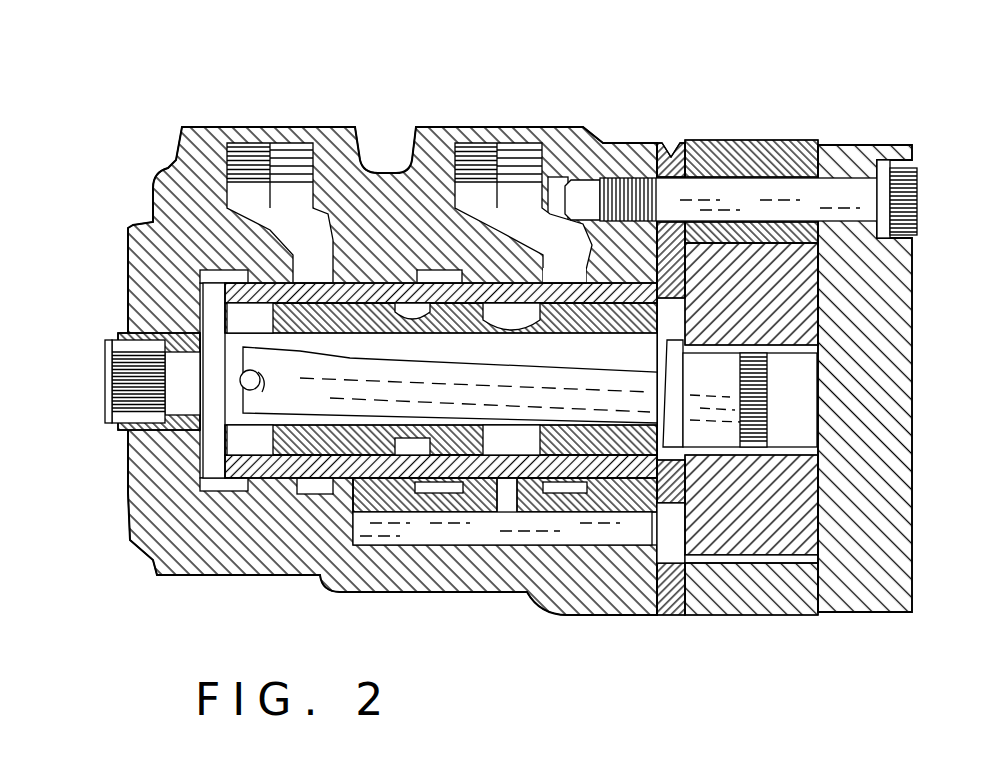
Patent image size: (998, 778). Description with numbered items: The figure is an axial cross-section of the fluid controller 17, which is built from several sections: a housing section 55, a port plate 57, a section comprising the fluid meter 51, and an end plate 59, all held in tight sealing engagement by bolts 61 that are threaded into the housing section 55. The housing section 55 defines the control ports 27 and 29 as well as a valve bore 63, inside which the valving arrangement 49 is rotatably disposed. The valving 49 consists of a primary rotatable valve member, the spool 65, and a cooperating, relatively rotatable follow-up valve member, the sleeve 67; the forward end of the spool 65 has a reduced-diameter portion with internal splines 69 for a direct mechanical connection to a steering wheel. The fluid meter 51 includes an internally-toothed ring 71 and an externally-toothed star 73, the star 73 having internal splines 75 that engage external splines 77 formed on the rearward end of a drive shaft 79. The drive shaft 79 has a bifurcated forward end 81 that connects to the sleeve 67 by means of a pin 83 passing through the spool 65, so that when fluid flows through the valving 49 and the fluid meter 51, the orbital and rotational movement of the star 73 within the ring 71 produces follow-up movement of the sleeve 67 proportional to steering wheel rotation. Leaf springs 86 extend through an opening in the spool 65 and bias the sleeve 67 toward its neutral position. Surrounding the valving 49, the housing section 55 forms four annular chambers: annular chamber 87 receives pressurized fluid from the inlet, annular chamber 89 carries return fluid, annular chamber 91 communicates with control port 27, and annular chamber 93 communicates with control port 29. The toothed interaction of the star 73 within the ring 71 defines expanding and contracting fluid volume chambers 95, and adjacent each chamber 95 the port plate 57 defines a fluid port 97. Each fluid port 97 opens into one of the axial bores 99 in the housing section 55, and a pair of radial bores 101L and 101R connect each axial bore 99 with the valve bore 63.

The fluid controller 17 is at (190, 102).
The control port 27 is at (293, 155).
The control port 29 is at (525, 150).
The valving arrangement 49 is at (603, 337).
The fluid meter 51 is at (763, 131).
The housing section 55 is at (603, 140).
The port plate 57 is at (668, 150).
The end plate 59 is at (862, 148).
The bolts 61 is at (917, 195).
The valve bore 63 is at (508, 283).
The spool 65 is at (503, 325).
The sleeve 67 is at (292, 470).
The internal splines 69 is at (104, 362).
The internally-toothed ring 71 is at (775, 600).
The externally-toothed star 73 is at (788, 290).
The internal splines 75 is at (808, 445).
The external splines 77 is at (770, 410).
The drive shaft 79 is at (450, 385).
The bifurcated forward end 81 is at (262, 385).
The pin 83 is at (268, 390).
The leaf springs 86 is at (207, 455).
The annular chamber 87 is at (445, 275).
The annular chamber 89 is at (228, 275).
The annular chamber 91 is at (325, 275).
The annular chamber 93 is at (578, 268).
The fluid volume chambers 95 is at (800, 560).
The fluid port 97 is at (675, 537).
The axial bores 99 is at (433, 527).
The radial bore 101L is at (362, 498).
The radial bore 101R is at (510, 500).